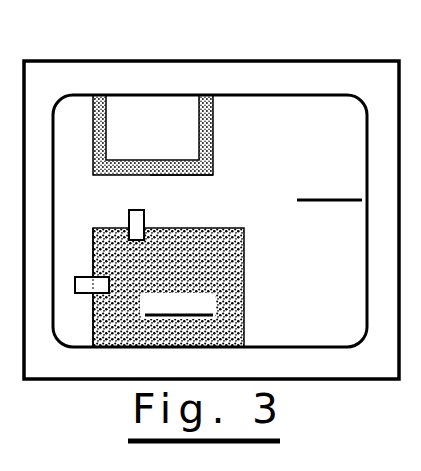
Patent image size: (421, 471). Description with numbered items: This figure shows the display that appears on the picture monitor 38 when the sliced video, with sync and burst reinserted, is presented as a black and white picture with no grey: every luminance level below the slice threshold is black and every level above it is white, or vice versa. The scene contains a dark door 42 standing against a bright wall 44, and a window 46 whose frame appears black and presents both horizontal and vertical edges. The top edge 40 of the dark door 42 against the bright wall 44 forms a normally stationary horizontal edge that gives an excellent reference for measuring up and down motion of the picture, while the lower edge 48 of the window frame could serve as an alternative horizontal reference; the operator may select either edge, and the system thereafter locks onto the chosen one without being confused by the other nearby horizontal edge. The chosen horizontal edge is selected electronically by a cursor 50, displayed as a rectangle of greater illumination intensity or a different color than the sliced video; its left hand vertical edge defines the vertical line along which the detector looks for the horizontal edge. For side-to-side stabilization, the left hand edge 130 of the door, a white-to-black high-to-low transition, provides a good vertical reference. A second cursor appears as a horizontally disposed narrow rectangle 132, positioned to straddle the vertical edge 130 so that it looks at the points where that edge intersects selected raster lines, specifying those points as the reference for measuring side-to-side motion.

The picture monitor 38 is at (322, 62).
The top edge of dark door 40 is at (223, 228).
The dark door 42 is at (228, 279).
The bright wall 44 is at (330, 157).
The window 46 is at (178, 123).
The lower edge of window frame 48 is at (205, 178).
The cursor 50 is at (144, 212).
The left hand edge of dark door 130 is at (93, 242).
The horizontally disposed narrow rectangle 132 is at (110, 275).